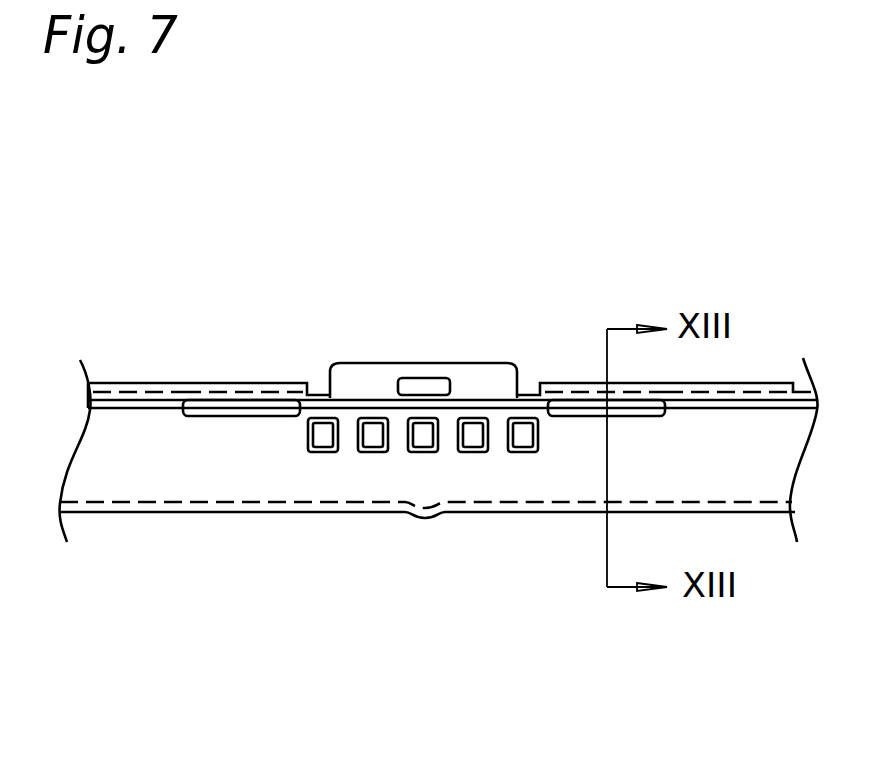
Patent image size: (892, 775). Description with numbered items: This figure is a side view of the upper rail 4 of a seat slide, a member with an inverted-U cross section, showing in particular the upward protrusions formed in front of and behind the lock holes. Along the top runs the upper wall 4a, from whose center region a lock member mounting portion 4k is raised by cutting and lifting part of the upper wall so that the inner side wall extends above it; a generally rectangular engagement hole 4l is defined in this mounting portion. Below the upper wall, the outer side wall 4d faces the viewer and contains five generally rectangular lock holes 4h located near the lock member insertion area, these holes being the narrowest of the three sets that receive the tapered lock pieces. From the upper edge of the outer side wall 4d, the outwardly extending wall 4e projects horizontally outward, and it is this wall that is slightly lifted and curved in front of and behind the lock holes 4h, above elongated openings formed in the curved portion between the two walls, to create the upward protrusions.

The upper rail 4 is at (368, 512).
The upper wall 4a is at (133, 382).
The outer side wall 4d is at (735, 470).
The outwardly extending wall 4e is at (757, 403).
The lock holes 4h is at (523, 452).
The lock member mounting portion 4k is at (373, 372).
The engagement hole 4l is at (427, 383).